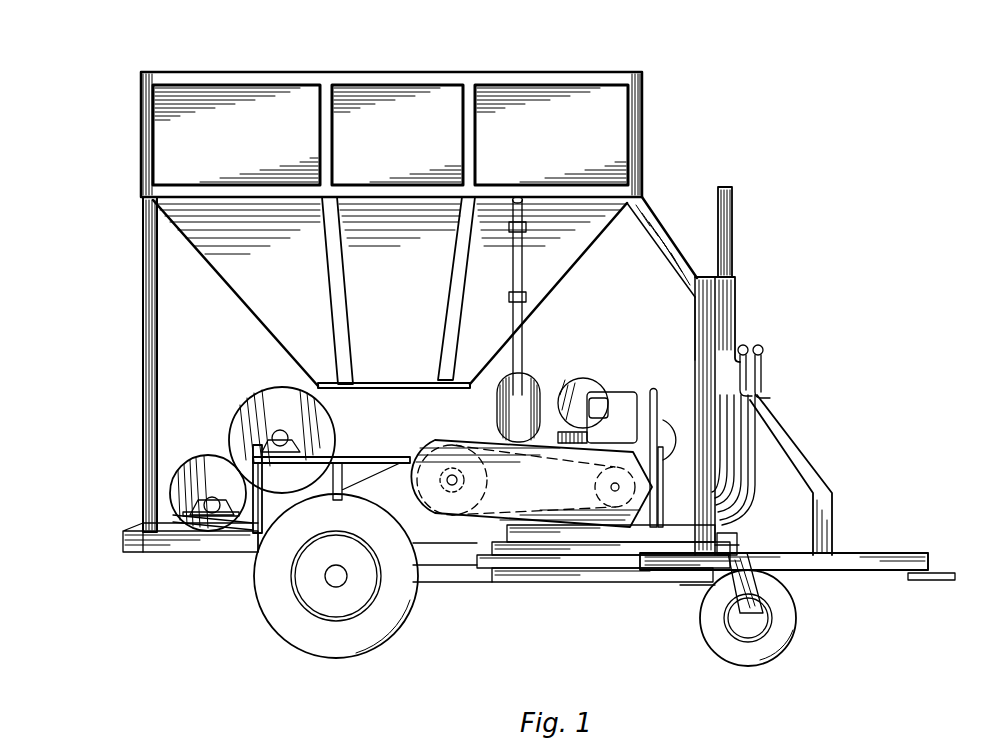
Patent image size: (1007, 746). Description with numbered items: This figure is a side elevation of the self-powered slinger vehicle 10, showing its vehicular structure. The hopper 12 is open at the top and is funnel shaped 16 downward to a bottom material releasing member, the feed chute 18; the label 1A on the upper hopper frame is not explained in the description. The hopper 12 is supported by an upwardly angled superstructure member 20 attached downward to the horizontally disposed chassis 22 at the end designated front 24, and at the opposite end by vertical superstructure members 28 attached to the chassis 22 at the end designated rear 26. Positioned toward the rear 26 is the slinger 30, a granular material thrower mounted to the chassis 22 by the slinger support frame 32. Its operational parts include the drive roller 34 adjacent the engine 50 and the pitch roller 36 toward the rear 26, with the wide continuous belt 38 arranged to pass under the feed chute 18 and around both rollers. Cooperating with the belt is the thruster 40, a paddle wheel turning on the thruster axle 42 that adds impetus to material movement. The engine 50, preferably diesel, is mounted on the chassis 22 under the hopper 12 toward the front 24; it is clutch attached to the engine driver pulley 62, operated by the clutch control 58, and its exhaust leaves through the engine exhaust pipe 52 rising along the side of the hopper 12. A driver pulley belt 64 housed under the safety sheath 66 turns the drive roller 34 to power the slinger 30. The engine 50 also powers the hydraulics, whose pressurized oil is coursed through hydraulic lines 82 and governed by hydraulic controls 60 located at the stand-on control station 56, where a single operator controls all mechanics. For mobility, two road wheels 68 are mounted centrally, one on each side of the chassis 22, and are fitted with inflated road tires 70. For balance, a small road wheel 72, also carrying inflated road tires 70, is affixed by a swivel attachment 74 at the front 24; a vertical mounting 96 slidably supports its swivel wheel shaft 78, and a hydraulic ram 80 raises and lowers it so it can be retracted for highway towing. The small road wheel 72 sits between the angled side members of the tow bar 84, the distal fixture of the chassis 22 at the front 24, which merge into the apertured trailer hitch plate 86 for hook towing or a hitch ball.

The hopper top frame 1A is at (435, 65).
The slinger vehicle 10 is at (133, 203).
The hopper 12 is at (140, 118).
The funnel shaped portion 16 is at (255, 305).
The feed chute 18 is at (388, 383).
The upwardly angled superstructure member 20 is at (652, 215).
The chassis 22 is at (450, 583).
The front 24 is at (949, 549).
The rear 26 is at (114, 543).
The vertical superstructure members 28 is at (140, 292).
The slinger 30 is at (136, 459).
The slinger support frame 32 is at (252, 525).
The drive roller 34 is at (448, 458).
The pitch roller 36 is at (172, 526).
The continuous belt 38 is at (200, 462).
The thruster 40 is at (268, 418).
The thruster axle 42 is at (276, 436).
The engine 50 is at (614, 392).
The engine exhaust pipe 52 is at (520, 197).
The stand-on control station 56 is at (780, 555).
The clutch control 58 is at (653, 388).
The hydraulic controls 60 is at (762, 378).
The engine driver pulley 62 is at (613, 495).
The driver pulley belt 64 is at (548, 498).
The safety sheath 66 is at (553, 443).
The road wheels 68 is at (300, 584).
The inflated road tires 70 is at (388, 648).
The small road wheel 72 is at (733, 612).
The swivel attachment 74 is at (736, 538).
The swivel wheel shaft 78 is at (733, 218).
The hydraulic ram 80 is at (695, 323).
The hydraulic lines 82 is at (753, 443).
The tow bar 84 is at (853, 555).
The trailer hitch plate 86 is at (953, 581).
The vertical mounting 96 is at (737, 305).